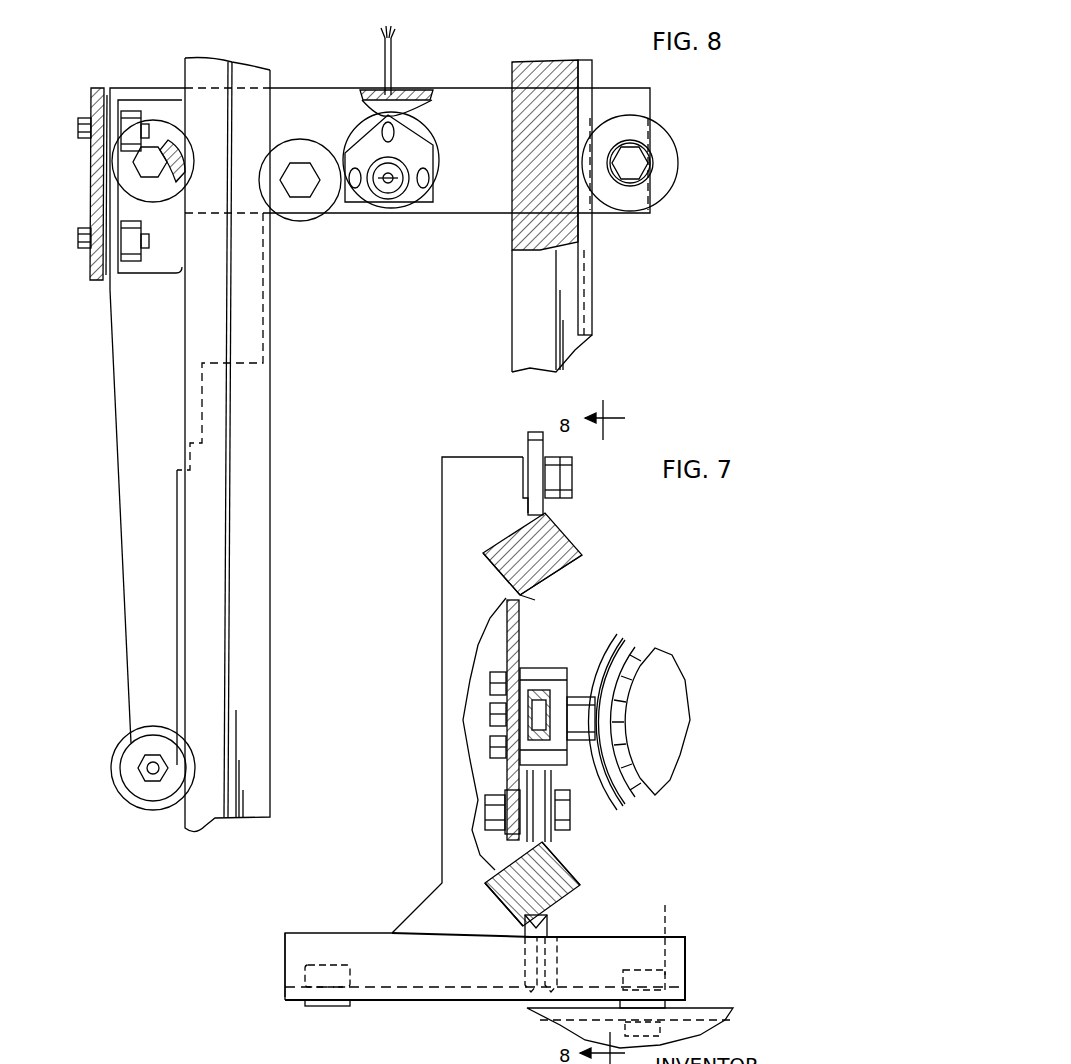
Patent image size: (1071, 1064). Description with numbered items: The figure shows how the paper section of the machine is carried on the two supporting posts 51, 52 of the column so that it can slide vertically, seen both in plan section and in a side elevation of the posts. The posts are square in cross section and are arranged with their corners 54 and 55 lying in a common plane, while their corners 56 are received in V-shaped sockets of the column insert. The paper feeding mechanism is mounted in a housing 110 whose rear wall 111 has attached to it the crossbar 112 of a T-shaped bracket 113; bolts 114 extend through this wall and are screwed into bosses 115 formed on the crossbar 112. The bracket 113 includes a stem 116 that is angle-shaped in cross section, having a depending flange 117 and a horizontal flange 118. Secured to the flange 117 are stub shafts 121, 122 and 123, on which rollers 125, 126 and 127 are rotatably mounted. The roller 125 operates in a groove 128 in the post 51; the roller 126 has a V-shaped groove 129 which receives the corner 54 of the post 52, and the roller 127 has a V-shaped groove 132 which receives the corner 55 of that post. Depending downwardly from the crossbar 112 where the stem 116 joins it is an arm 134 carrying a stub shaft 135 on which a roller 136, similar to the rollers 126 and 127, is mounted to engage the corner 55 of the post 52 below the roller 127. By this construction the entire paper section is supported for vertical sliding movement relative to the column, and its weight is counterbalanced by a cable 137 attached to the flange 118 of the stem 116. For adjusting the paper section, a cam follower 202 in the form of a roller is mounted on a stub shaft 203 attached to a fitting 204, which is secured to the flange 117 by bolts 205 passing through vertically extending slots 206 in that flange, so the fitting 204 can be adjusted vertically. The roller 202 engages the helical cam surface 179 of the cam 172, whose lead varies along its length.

In FIG. 8, the post 51 is at (540, 312).
In FIG. 7, the post 51 is at (555, 573).
In FIG. 8, the post 52 is at (262, 440).
In FIG. 7, the post 52 is at (560, 870).
In FIG. 8, the corner 54 is at (272, 512).
In FIG. 7, the corner 54 is at (536, 600).
In FIG. 8, the corner 55 is at (185, 574).
In FIG. 7, the corner 55 is at (518, 920).
In FIG. 7, the corner 56 is at (500, 555).
In FIG. 8, the housing 110 is at (95, 270).
In FIG. 7, the housing 110 is at (705, 1030).
In FIG. 8, the rear wall 111 is at (91, 100).
In FIG. 7, the rear wall 111 is at (685, 1022).
In FIG. 7, the crossbar 112 is at (478, 1002).
In FIG. 8, the T-shaped bracket 113 is at (112, 86).
In FIG. 7, the T-shaped bracket 113 is at (284, 1001).
In FIG. 8, the bolts 114 is at (78, 128).
In FIG. 7, the bolts 114 is at (630, 1025).
In FIG. 7, the bosses 115 is at (325, 1006).
In FIG. 8, the stem 116 is at (297, 86).
In FIG. 7, the stem 116 is at (460, 607).
In FIG. 8, the depending flange 117 is at (492, 100).
In FIG. 7, the depending flange 117 is at (507, 630).
In FIG. 8, the horizontal flange 118 is at (418, 92).
In FIG. 7, the horizontal flange 118 is at (465, 500).
In FIG. 8, the stub shaft 121 is at (636, 163).
In FIG. 7, the stub shaft 121 is at (573, 477).
In FIG. 8, the stub shaft 122 is at (300, 188).
In FIG. 8, the stub shaft 123 is at (147, 162).
In FIG. 8, the roller 125 is at (660, 138).
In FIG. 7, the roller 125 is at (535, 445).
In FIG. 8, the roller 126 is at (304, 150).
In FIG. 7, the roller 126 is at (527, 783).
In FIG. 8, the roller 127 is at (152, 192).
In FIG. 7, the roller 127 is at (548, 930).
In FIG. 8, the groove 128 is at (585, 77).
In FIG. 7, the groove 128 is at (565, 540).
In FIG. 7, the V-shaped groove 129 is at (540, 776).
In FIG. 8, the V-shaped groove 132 is at (178, 185).
In FIG. 7, the V-shaped groove 132 is at (540, 936).
In FIG. 8, the arm 134 is at (140, 537).
In FIG. 8, the stub shaft 135 is at (153, 775).
In FIG. 8, the roller 136 is at (116, 777).
In FIG. 8, the cable 137 is at (393, 55).
In FIG. 7, the helical cam 172 is at (622, 636).
In FIG. 7, the cam surface 179 is at (630, 805).
In FIG. 8, the cam follower 202 is at (405, 196).
In FIG. 7, the cam follower 202 is at (580, 715).
In FIG. 8, the stub shaft 203 is at (388, 195).
In FIG. 7, the stub shaft 203 is at (540, 700).
In FIG. 8, the fitting 204 is at (420, 152).
In FIG. 7, the fitting 204 is at (560, 675).
In FIG. 7, the bolts 205 is at (490, 747).
In FIG. 8, the slots 206 is at (396, 136).